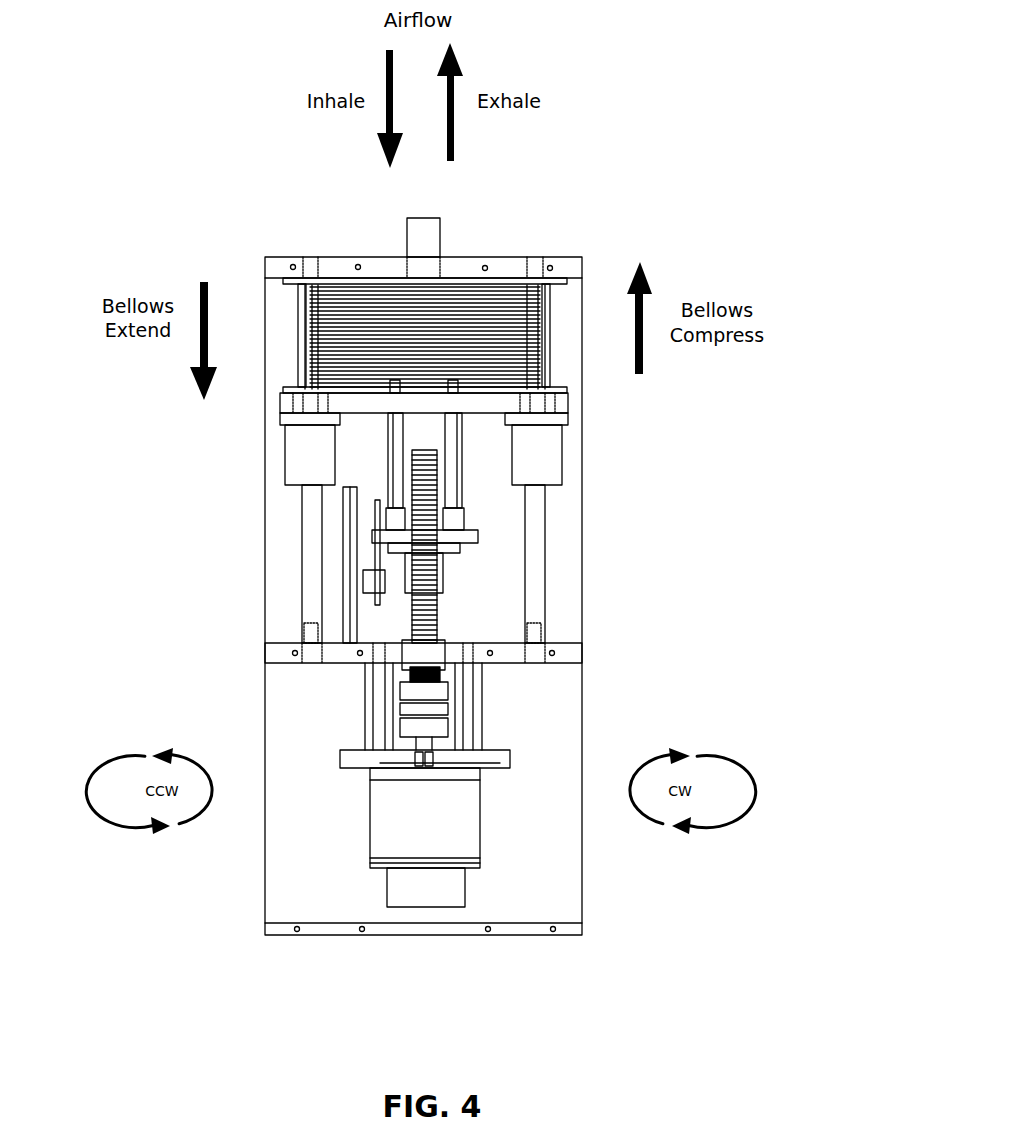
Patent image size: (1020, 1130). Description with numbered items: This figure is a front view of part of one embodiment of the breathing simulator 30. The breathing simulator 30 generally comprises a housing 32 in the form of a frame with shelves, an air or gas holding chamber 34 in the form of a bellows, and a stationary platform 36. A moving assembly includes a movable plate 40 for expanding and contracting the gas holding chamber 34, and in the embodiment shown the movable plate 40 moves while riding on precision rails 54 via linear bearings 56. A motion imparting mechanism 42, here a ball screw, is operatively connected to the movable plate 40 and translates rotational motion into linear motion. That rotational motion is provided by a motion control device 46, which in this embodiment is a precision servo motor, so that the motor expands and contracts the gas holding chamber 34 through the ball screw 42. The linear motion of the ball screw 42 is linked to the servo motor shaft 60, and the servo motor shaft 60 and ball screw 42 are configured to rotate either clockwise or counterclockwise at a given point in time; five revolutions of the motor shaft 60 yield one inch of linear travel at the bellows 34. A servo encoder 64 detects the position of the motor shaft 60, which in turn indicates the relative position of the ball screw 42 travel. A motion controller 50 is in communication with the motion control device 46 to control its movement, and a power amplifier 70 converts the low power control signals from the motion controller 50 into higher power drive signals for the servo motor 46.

The breathing simulator 30 is at (602, 148).
The housing 32 is at (582, 708).
The gas holding chamber 34 is at (518, 333).
The stationary platform 36 is at (582, 657).
The movable plate 40 is at (500, 402).
The motion imparting mechanism 42 is at (405, 577).
The motion control device 46 is at (455, 817).
The motion controller 50 is at (287, 205).
The precision rails 54 is at (310, 535).
The linear bearings 56 is at (312, 443).
The servo motor shaft 60 is at (427, 743).
The servo encoder 64 is at (445, 883).
The power amplifier 70 is at (555, 208).